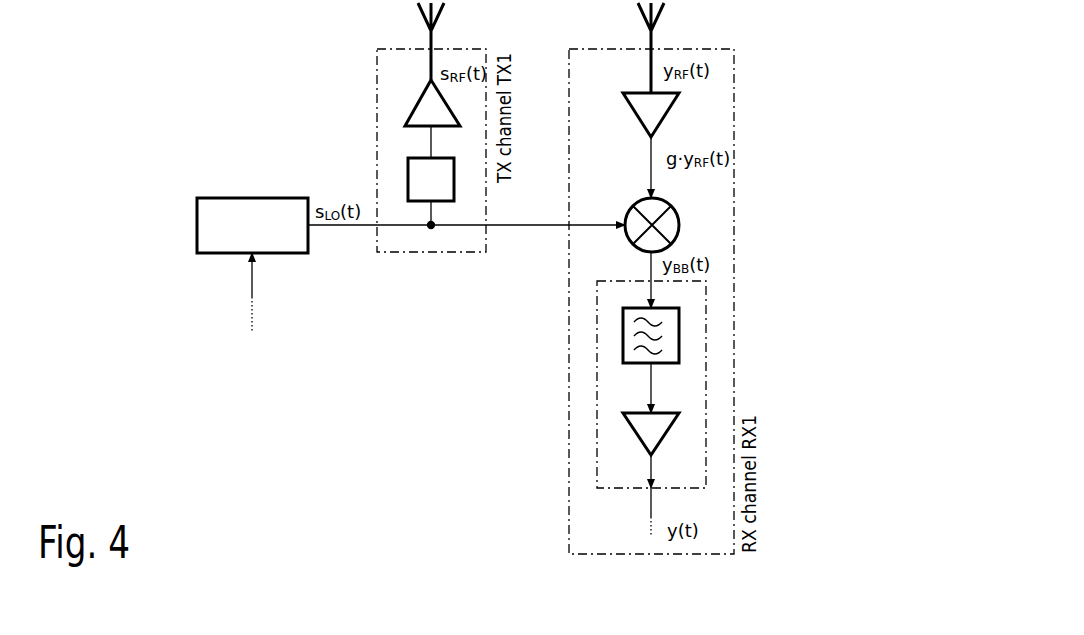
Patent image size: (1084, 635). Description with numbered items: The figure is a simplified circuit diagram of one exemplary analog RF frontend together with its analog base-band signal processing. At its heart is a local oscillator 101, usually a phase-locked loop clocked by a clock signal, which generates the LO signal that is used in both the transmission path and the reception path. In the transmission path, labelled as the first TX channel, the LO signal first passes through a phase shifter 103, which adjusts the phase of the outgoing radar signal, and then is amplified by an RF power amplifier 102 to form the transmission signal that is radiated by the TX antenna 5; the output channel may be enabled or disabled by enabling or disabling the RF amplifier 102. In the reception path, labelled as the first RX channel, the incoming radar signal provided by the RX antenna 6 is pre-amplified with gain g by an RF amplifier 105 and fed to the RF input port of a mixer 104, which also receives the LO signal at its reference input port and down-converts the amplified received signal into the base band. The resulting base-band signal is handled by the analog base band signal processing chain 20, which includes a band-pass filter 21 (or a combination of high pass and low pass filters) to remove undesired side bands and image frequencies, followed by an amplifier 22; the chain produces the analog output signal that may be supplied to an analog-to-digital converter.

The TX antenna 5 is at (417, 21).
The RX antenna 6 is at (663, 22).
The local oscillator 101 is at (247, 198).
The RF power amplifier 102 is at (406, 118).
The phase shifter 103 is at (408, 158).
The mixer 104 is at (680, 215).
The RF amplifier 105 is at (668, 106).
The analog base band signal processing chain 20 is at (597, 475).
The band-pass filter 21 is at (623, 337).
The amplifier 22 is at (635, 433).